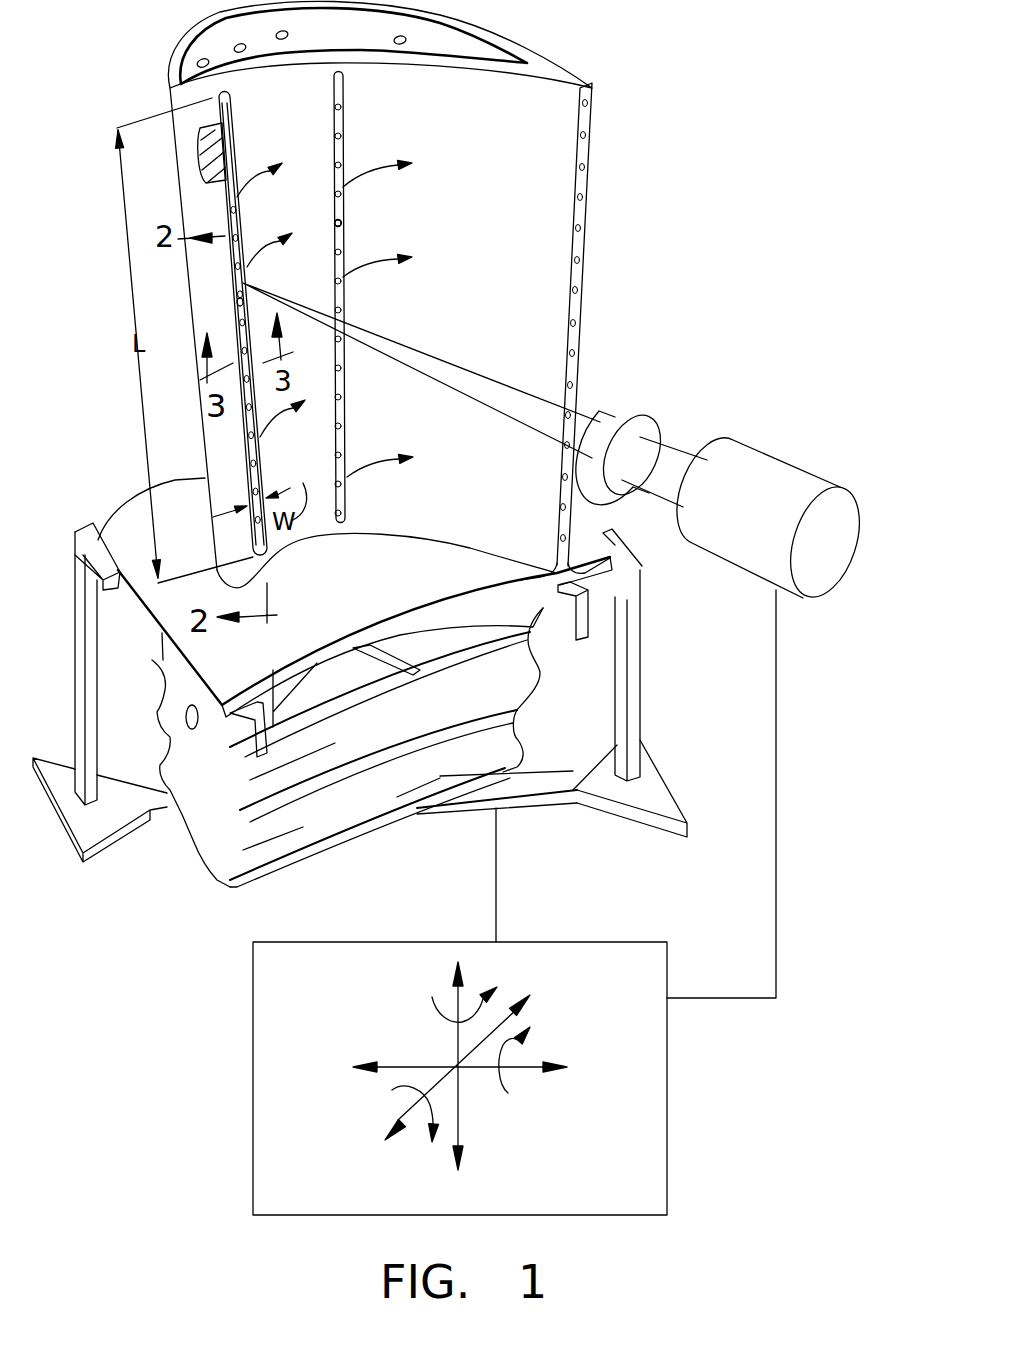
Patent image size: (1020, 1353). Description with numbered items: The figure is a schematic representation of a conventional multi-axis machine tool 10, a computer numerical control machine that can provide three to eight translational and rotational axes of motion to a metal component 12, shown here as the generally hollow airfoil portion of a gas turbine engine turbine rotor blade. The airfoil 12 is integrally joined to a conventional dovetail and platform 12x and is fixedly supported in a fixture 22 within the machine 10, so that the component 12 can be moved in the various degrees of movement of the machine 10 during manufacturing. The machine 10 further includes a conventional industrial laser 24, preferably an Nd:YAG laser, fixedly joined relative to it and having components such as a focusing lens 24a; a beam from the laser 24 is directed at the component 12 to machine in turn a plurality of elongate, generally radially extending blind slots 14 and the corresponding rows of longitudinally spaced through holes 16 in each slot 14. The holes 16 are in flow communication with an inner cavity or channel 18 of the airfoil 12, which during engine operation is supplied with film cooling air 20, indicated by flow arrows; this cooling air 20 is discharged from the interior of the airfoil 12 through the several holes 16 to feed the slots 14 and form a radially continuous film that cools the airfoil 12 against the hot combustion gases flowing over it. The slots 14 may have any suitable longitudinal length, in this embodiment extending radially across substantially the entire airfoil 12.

The multi-axis machine tool 10 is at (616, 1176).
The metal component 12 is at (570, 58).
The dovetail and platform 12x is at (212, 837).
The blind slots 14 is at (233, 143).
The through holes 16 is at (233, 303).
The inner cavity or channel 18 is at (210, 155).
The film cooling air 20 is at (365, 258).
The fixture 22 is at (640, 658).
The industrial laser 24 is at (792, 455).
The focusing lens 24a is at (637, 413).